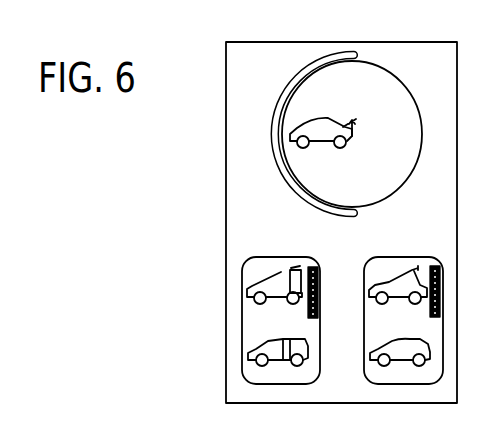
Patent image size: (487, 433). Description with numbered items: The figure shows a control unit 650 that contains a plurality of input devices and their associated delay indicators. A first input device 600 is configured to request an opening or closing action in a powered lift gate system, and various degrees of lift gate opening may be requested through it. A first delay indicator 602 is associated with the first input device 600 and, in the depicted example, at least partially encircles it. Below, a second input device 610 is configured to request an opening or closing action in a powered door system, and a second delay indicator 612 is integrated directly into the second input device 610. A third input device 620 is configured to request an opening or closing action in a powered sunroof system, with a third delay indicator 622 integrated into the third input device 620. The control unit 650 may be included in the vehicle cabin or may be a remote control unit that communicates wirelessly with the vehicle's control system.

The control unit 650 is at (272, 42).
The first input device 600 is at (414, 107).
The first delay indicator 602 is at (272, 111).
The second input device 610 is at (300, 308).
The second delay indicator 612 is at (316, 267).
The third input device 620 is at (403, 300).
The third delay indicator 622 is at (435, 264).